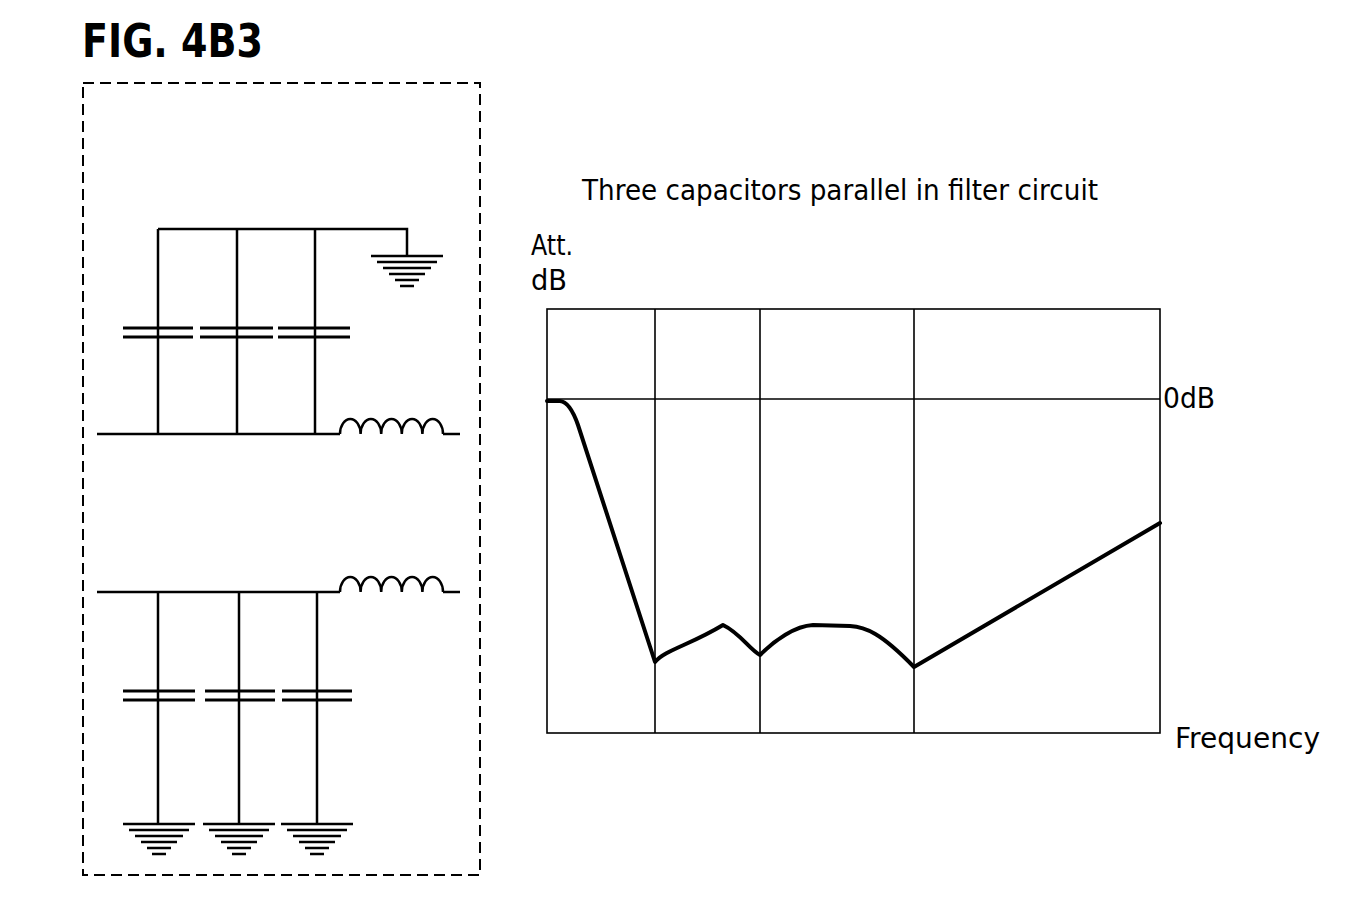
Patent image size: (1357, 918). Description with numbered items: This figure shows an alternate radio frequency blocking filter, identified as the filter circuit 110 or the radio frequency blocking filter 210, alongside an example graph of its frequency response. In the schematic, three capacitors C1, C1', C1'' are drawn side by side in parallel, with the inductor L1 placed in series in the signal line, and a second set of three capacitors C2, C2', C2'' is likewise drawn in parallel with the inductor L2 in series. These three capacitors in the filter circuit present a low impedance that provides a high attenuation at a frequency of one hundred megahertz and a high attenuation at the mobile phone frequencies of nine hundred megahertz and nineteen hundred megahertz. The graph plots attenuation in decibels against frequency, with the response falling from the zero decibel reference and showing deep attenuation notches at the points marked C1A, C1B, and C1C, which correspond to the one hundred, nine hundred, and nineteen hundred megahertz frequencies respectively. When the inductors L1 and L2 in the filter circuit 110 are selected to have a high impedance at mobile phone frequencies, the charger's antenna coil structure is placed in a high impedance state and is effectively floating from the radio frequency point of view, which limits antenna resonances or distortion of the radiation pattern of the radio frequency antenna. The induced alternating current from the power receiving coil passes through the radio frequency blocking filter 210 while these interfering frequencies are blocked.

The filter circuit 110 is at (281, 479).
The radio frequency blocking filter 210 is at (281, 479).
The capacitor C1 is at (234, 331).
The capacitor C1' is at (310, 331).
The capacitor C1'' is at (152, 331).
The inductor L1 is at (391, 409).
The capacitor C2 is at (237, 723).
The capacitor C2' is at (314, 723).
The capacitor C2'' is at (154, 723).
The inductor L2 is at (391, 605).
The attenuation notch at 100MHz C1A is at (657, 544).
The attenuation notch at 900MHz C1B is at (761, 544).
The attenuation notch at 1900MHz C1C is at (915, 544).